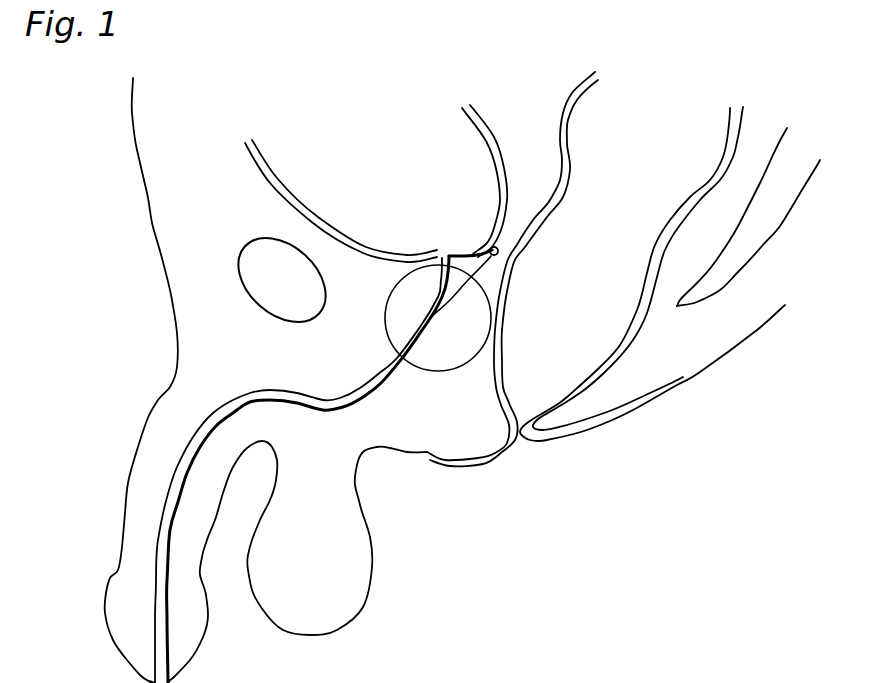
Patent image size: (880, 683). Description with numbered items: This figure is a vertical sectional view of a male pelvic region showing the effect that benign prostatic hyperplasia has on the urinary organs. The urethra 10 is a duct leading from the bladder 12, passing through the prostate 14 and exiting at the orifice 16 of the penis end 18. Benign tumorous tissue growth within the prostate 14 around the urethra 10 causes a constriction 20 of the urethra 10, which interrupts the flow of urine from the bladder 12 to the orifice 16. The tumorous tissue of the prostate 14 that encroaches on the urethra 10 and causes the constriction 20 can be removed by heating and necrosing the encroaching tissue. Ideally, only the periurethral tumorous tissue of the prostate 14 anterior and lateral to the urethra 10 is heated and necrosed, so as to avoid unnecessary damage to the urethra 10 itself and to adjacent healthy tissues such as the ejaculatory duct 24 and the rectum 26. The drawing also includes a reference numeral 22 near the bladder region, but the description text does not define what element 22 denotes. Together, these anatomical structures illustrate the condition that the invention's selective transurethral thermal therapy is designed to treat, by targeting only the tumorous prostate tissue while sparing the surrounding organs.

The urethra 10 is at (210, 407).
The bladder 12 is at (313, 175).
The prostate 14 is at (444, 330).
The orifice 16 is at (205, 675).
The penis end 18 is at (118, 649).
The constriction 20 is at (430, 308).
The bladder 22 is at (446, 250).
The ejaculatory duct 24 is at (505, 291).
The rectum 26 is at (535, 363).